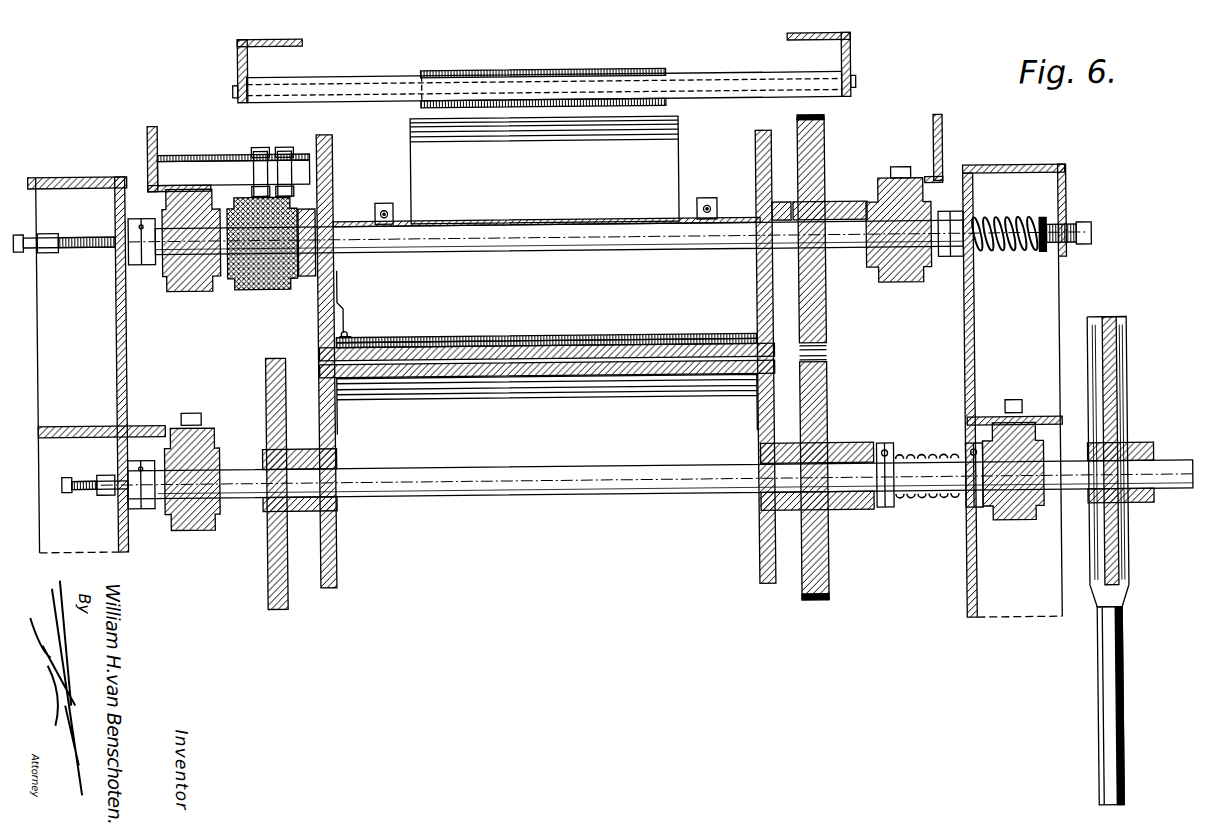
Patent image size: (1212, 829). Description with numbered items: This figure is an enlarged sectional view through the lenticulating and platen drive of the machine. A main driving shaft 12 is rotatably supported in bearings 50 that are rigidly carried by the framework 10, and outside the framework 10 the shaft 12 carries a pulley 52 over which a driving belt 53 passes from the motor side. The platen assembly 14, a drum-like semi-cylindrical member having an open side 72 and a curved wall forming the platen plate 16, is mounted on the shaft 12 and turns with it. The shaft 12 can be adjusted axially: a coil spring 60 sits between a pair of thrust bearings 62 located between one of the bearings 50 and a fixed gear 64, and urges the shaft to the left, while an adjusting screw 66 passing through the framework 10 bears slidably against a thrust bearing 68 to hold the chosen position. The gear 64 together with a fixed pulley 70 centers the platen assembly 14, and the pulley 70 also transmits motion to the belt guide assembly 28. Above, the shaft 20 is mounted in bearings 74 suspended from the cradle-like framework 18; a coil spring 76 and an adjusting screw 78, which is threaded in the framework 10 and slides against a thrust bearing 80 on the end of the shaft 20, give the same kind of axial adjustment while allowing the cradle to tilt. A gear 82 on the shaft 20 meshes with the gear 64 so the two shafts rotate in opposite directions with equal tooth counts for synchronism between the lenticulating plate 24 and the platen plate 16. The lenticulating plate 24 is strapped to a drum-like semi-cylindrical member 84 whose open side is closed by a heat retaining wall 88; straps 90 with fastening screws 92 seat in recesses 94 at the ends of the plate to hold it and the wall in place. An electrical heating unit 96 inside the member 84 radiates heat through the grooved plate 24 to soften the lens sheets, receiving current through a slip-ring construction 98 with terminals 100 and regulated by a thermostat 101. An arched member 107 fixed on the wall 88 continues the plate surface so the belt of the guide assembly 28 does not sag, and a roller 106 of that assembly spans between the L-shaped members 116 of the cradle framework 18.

The framework 10 is at (147, 337).
The main driving shaft 12 is at (519, 474).
The platen assembly 14 is at (316, 336).
The curved platen plate 16 is at (500, 370).
The auxiliary cradle-like framework 18 is at (158, 149).
The horizontal rotatable shaft 20 is at (626, 224).
The lenticulating plate 24 is at (546, 358).
The endless belt assembly 28 is at (422, 70).
The bearings 50 is at (205, 443).
The pulley 52 is at (1114, 387).
The driving belt 53 is at (1121, 692).
The coil spring 60 is at (927, 503).
The thrust bearings 62 is at (893, 449).
The fixed gear 64 is at (829, 410).
The adjusting screw 66 is at (67, 476).
The thrust bearing 68 is at (143, 506).
The fixed pulley 70 is at (287, 446).
The open side 72 is at (681, 537).
The bearings 74 is at (174, 289).
The coil spring 76 is at (1011, 223).
The adjusting screw 78 is at (72, 236).
The thrust bearing 80 is at (134, 262).
The gear 82 is at (828, 348).
The drum-like semi-cylindrical member 84 is at (485, 345).
The heat retaining wall 88 is at (572, 219).
The straps 90 is at (384, 203).
The fastening screws 92 is at (384, 212).
The recesses 94 is at (403, 350).
The electrical heating unit 96 is at (600, 336).
The slip-ring construction 98 is at (268, 288).
The terminals 100 is at (288, 150).
The thermostat 101 is at (350, 290).
The roller 106 is at (572, 79).
The arched member 107 is at (673, 160).
The L-shaped members 116 is at (241, 46).